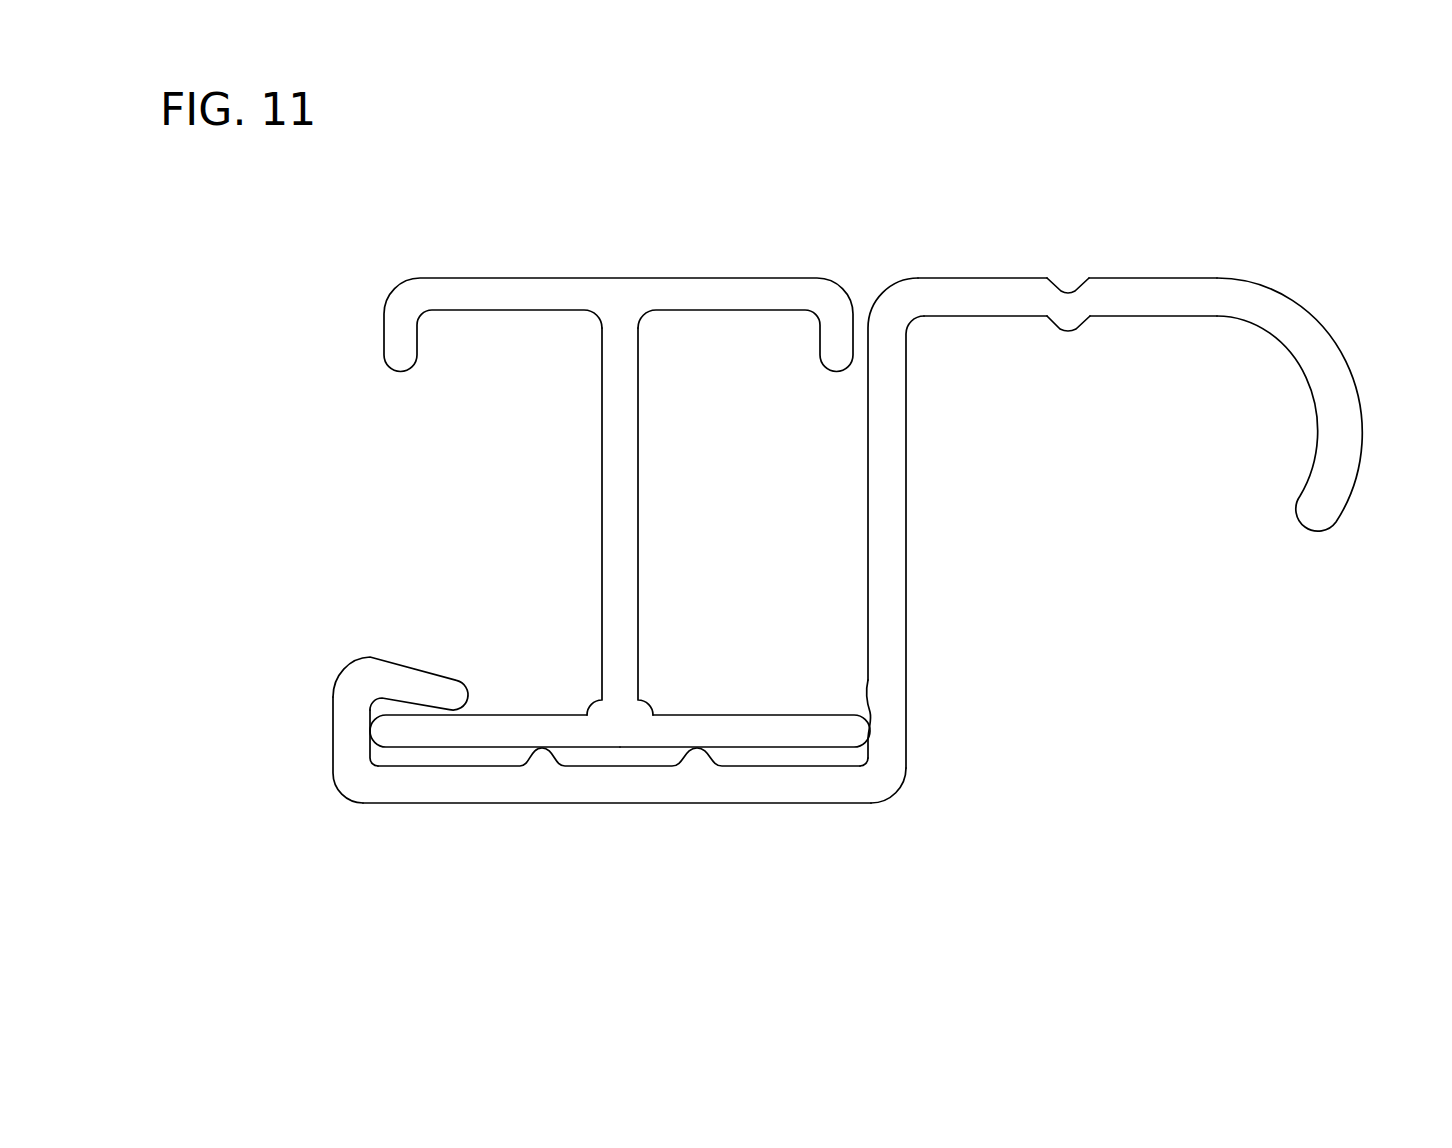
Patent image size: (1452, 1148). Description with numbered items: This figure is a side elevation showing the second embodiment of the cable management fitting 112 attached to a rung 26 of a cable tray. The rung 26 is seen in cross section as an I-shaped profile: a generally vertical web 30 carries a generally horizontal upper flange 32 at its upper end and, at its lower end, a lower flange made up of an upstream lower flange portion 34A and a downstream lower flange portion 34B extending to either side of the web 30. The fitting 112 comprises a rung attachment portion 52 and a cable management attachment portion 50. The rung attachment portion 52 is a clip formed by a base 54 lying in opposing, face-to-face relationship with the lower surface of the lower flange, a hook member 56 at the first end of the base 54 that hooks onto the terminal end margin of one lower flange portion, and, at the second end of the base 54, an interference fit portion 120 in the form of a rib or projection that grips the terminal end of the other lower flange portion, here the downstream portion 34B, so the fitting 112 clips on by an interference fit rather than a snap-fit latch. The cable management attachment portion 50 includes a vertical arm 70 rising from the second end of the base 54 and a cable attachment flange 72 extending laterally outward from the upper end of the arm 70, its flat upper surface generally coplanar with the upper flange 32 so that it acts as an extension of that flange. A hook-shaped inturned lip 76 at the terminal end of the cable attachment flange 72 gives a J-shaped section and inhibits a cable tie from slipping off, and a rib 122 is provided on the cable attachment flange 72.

The rung 26 is at (735, 220).
The vertical web 30 is at (632, 532).
The upper flange 32 is at (497, 277).
The upstream lower flange portion 34A is at (433, 731).
The downstream lower flange portion 34B is at (748, 732).
The cable management attachment portion 50 is at (910, 597).
The rung attachment portion 52 is at (348, 802).
The base 54 is at (598, 785).
The hook member 56 is at (347, 670).
The vertical arm 70 is at (898, 537).
The cable attachment flange 72 is at (996, 292).
The inturned lip 76 is at (1330, 497).
The cable management fitting 112 is at (905, 818).
The interference fit portion 120 is at (860, 718).
The rib 122 is at (1077, 324).